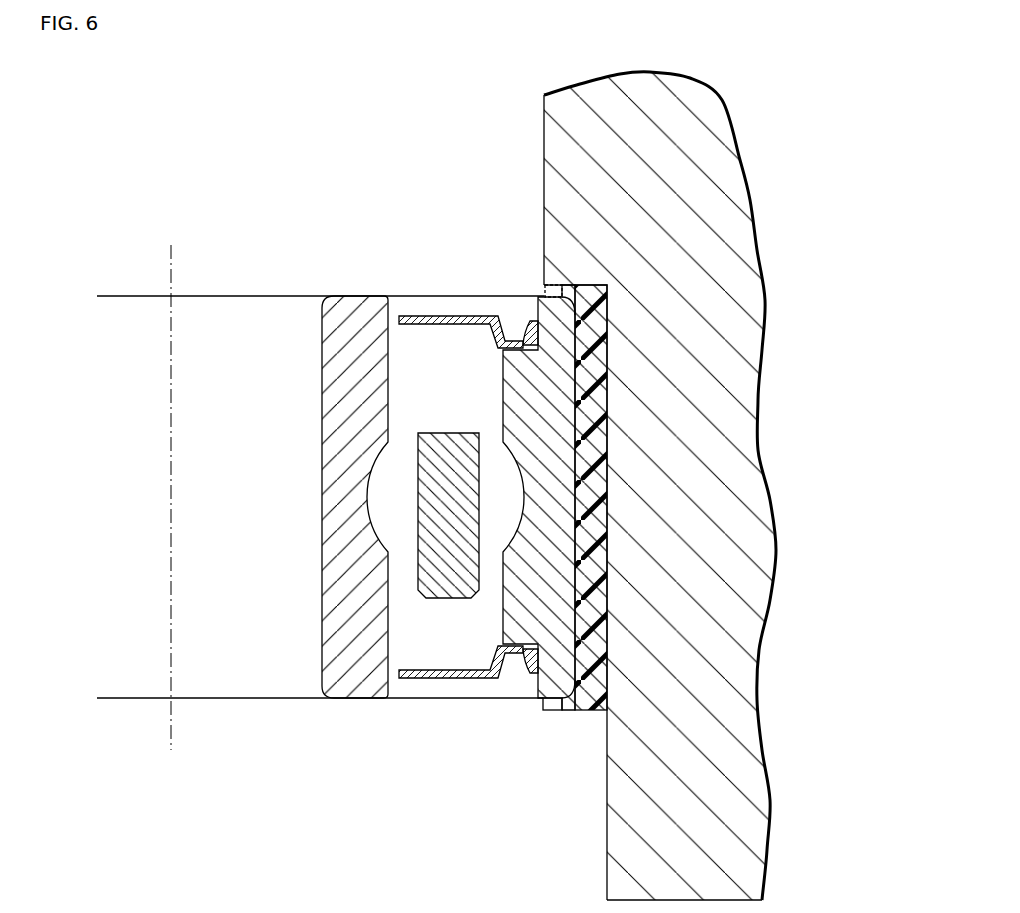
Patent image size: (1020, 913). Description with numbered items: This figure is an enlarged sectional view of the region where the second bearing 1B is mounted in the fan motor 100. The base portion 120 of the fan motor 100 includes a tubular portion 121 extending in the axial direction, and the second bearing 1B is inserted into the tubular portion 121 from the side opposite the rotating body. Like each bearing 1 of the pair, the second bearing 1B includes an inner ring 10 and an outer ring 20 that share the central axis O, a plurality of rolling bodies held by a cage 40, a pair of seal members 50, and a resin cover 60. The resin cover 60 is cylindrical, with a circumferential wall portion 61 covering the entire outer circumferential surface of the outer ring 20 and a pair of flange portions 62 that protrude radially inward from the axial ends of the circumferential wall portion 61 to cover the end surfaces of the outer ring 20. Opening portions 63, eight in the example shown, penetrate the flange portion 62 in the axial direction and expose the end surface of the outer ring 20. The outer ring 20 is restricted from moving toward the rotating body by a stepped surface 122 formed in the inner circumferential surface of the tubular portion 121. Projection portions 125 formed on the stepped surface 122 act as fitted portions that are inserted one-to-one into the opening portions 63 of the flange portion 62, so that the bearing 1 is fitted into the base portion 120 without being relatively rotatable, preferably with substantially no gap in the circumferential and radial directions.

The fan motor 100 is at (207, 94).
The second bearing 1B is at (349, 285).
The bearing 1 is at (320, 481).
The inner ring 10 is at (330, 565).
The outer ring 20 is at (515, 600).
The cage 40 is at (420, 565).
The seal member 50 is at (445, 315).
The resin cover 60 is at (614, 440).
The circumferential wall portion 61 is at (600, 517).
The flange portion 62 is at (548, 290).
The opening portion 63 is at (548, 293).
The base portion 120 is at (660, 486).
The tubular portion 121 is at (606, 100).
The stepped surface 122 is at (548, 289).
The projection portion 125 is at (552, 300).
The central axis O is at (170, 277).